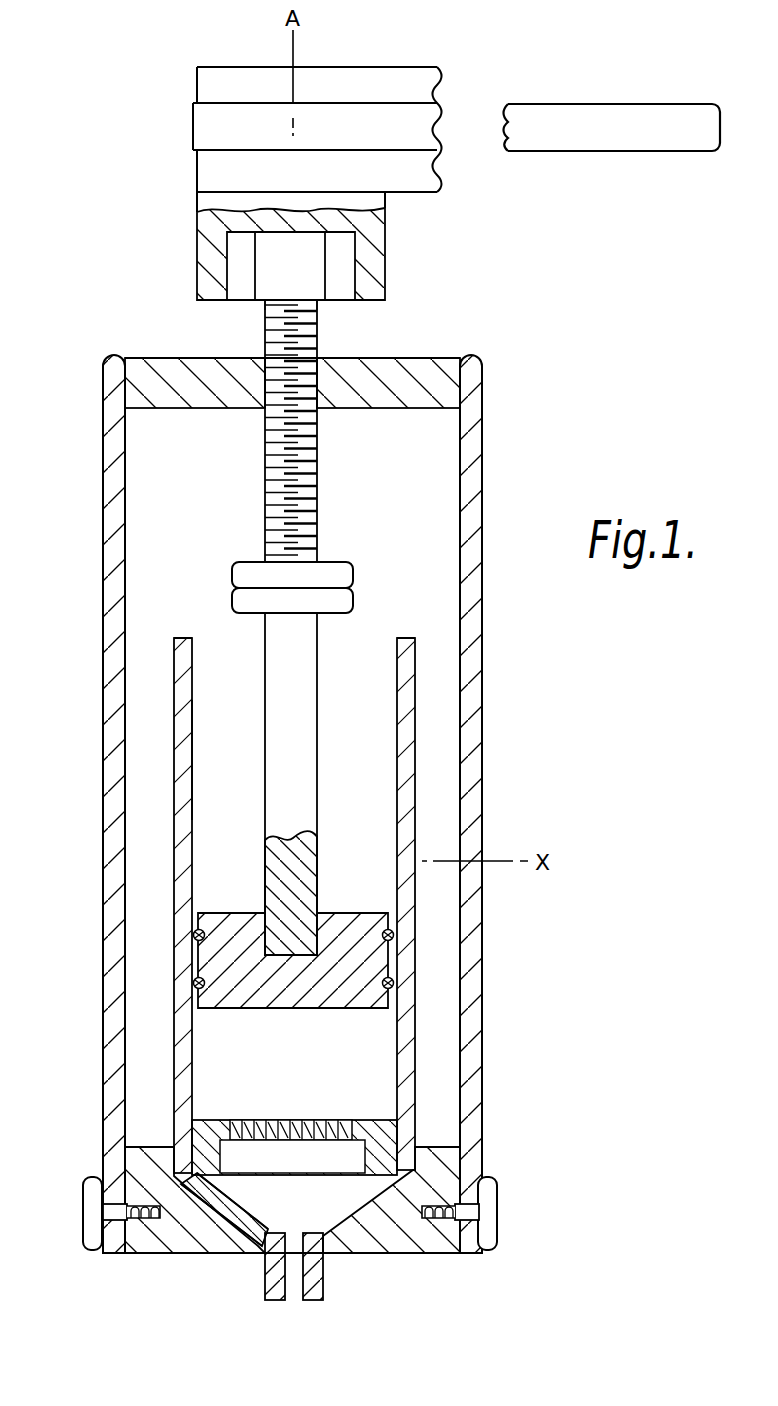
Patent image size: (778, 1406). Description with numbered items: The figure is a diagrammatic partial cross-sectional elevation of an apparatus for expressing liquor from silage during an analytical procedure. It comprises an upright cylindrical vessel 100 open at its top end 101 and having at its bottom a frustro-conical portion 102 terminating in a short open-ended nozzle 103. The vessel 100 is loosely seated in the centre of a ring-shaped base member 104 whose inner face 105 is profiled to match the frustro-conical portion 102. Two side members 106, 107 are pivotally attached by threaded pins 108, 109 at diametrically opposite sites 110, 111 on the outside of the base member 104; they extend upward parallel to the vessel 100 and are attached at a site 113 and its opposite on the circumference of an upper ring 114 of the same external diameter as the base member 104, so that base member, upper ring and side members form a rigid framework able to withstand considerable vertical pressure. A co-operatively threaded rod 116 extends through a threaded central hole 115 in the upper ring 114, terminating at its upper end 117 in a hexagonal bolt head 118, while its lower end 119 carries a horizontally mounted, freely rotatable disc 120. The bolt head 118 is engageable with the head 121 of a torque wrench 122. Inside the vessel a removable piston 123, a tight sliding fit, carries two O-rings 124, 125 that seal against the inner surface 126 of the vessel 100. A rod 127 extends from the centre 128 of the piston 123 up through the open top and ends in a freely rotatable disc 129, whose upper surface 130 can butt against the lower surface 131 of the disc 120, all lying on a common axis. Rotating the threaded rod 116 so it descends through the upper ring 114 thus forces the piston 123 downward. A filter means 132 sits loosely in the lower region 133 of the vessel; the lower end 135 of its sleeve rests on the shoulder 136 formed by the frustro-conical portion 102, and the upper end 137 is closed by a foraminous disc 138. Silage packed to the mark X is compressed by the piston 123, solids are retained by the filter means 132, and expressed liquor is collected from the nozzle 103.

The cylindrical vessel 100 is at (415, 678).
The open top end 101 is at (368, 653).
The frustro-conical portion 102 is at (227, 1228).
The nozzle 103 is at (323, 1278).
The base member 104 is at (405, 1253).
The inner face 105 is at (200, 1225).
The side member 106 is at (103, 1062).
The side member 107 is at (482, 1062).
The threaded pin 108 is at (88, 1210).
The threaded pin 109 is at (497, 1210).
The attachment site 110 is at (130, 1255).
The attachment site 111 is at (455, 1250).
The attachment site 113 is at (448, 372).
The upper ring 114 is at (422, 358).
The threaded central hole 115 is at (320, 373).
The threaded rod 116 is at (275, 475).
The upper end 117 is at (318, 304).
The hexagonal bolt head 118 is at (237, 304).
The lower end 119 is at (322, 562).
The disc 120 is at (243, 562).
The head 121 is at (197, 258).
The torque wrench 122 is at (538, 150).
The piston 123 is at (348, 913).
The O-ring 124 is at (218, 913).
The O-ring 125 is at (205, 987).
The inner surface 126 is at (195, 770).
The rod 127 is at (320, 760).
The centre 128 is at (290, 958).
The disc 129 is at (240, 610).
The upper surface 130 is at (240, 590).
The lower surface 131 is at (245, 575).
The filter means 132 is at (260, 1150).
The lower region 133 is at (366, 1094).
The lower end 135 is at (215, 1182).
The shoulder 136 is at (222, 1190).
The upper end 137 is at (210, 1120).
The foraminous disc 138 is at (272, 1120).